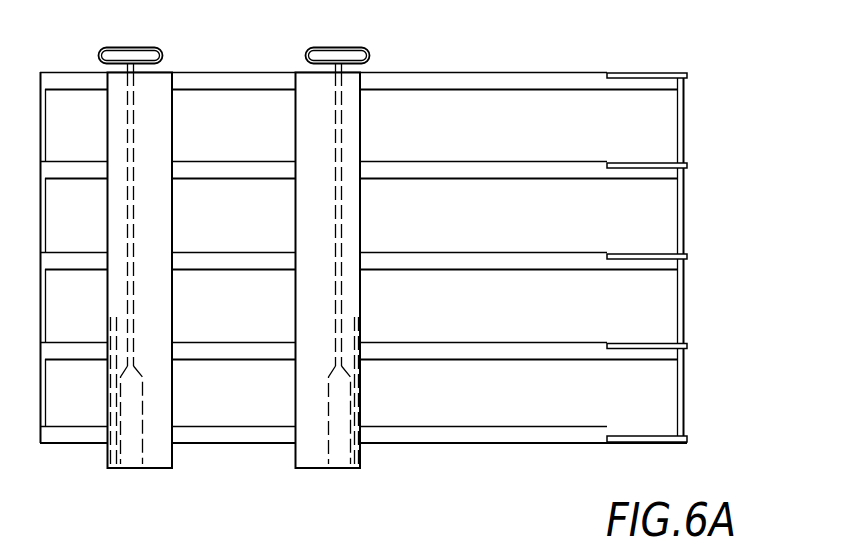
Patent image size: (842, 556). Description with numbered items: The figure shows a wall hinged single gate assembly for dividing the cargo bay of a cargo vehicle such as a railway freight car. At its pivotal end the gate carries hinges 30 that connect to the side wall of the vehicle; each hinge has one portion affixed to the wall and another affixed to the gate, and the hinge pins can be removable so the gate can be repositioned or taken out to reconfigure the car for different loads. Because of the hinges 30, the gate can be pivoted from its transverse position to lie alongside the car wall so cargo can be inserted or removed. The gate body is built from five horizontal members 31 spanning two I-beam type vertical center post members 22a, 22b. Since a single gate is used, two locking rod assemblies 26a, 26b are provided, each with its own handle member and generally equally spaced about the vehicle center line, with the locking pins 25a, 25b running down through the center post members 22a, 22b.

The vertical center post member 22a is at (173, 133).
The vertical center post member 22b is at (361, 132).
The first threaded rod 25a is at (127, 235).
The second threaded rod 25b is at (343, 211).
The locking rod assembly handle member 26a is at (129, 46).
The locking rod assembly handle member 26b is at (337, 46).
The hinge 30 is at (689, 75).
The horizontal member 31 is at (520, 91).